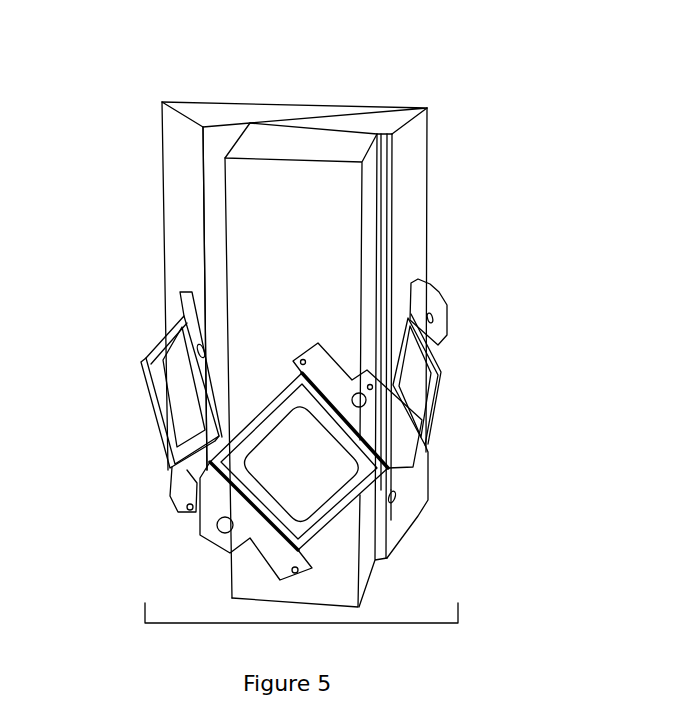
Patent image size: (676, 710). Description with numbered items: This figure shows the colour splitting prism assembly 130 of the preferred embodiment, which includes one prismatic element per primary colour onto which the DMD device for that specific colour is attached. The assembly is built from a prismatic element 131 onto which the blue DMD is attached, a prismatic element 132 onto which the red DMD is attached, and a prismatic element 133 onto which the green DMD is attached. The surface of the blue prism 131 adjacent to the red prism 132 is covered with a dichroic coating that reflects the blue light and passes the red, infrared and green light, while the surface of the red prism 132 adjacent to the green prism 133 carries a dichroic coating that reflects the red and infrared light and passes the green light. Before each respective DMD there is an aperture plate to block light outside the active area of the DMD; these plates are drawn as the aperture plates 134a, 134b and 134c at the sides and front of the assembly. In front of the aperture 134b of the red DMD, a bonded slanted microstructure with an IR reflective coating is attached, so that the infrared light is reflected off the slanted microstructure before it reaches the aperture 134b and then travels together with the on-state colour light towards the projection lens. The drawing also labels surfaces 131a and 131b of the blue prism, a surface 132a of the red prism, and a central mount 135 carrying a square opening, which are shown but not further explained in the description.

The colour splitting prism assembly 130 is at (295, 345).
The prismatic element 131 is at (226, 108).
The top plate of first frame 131a is at (272, 101).
The side plates of first frame 131b is at (215, 148).
The prismatic element 132 is at (403, 106).
The top plate of second frame 132a is at (358, 107).
The prismatic element 133 is at (311, 150).
The first bracket 134a is at (141, 362).
The aperture 134b is at (440, 323).
The third bracket plate 134c is at (413, 442).
The mounting member 135 is at (352, 311).